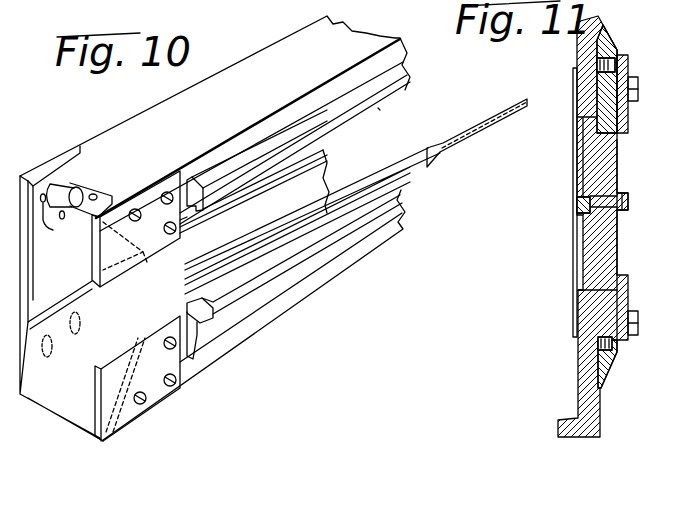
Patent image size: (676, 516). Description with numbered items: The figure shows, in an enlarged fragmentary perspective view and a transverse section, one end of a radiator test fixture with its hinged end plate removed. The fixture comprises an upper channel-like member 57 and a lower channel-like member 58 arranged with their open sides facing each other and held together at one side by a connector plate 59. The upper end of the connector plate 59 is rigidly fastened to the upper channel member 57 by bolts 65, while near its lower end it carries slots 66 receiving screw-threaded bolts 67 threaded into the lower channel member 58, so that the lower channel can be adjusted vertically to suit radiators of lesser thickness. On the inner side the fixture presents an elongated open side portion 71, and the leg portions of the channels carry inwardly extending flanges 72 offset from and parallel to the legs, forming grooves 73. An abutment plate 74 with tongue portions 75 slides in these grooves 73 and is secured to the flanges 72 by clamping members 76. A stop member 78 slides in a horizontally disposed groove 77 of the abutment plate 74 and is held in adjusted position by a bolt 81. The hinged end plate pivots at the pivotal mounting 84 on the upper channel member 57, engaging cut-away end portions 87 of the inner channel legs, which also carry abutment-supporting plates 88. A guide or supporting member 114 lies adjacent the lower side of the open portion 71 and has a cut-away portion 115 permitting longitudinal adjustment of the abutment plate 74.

In FIG. 10, the upper channel-like member 57 is at (139, 117).
In FIG. 11, the upper channel-like member 57 is at (609, 22).
In FIG. 10, the lower channel-like member 58 is at (308, 297).
In FIG. 11, the lower channel-like member 58 is at (604, 395).
In FIG. 10, the connector plate 59 is at (77, 280).
In FIG. 11, the connector plate 59 is at (593, 226).
In FIG. 10, the bolts 65 is at (62, 220).
In FIG. 10, the slots 66 is at (60, 305).
In FIG. 10, the screw-threaded bolts 67 is at (55, 350).
In FIG. 10, the open side portion 71 is at (378, 108).
In FIG. 11, the open side portion 71 is at (578, 117).
In FIG. 10, the inwardly extending flanges 72 is at (347, 120).
In FIG. 11, the inwardly extending flanges 72 is at (630, 62).
In FIG. 10, the grooves 73 is at (190, 178).
In FIG. 11, the grooves 73 is at (612, 37).
In FIG. 11, the abutment plate 74 is at (620, 150).
In FIG. 11, the tongue portions 75 is at (597, 66).
In FIG. 11, the clamping members 76 is at (638, 95).
In FIG. 11, the horizontally disposed groove 77 is at (590, 196).
In FIG. 11, the stop member 78 is at (577, 210).
In FIG. 11, the bolt 81 is at (628, 208).
In FIG. 10, the pivotal mounting 84 is at (97, 192).
In FIG. 10, the cut-away end portions 87 is at (140, 312).
In FIG. 10, the abutment-supporting plates 88 is at (98, 255).
In FIG. 10, the guide or supporting member 114 is at (310, 240).
In FIG. 10, the cut-away portion 115 is at (476, 128).